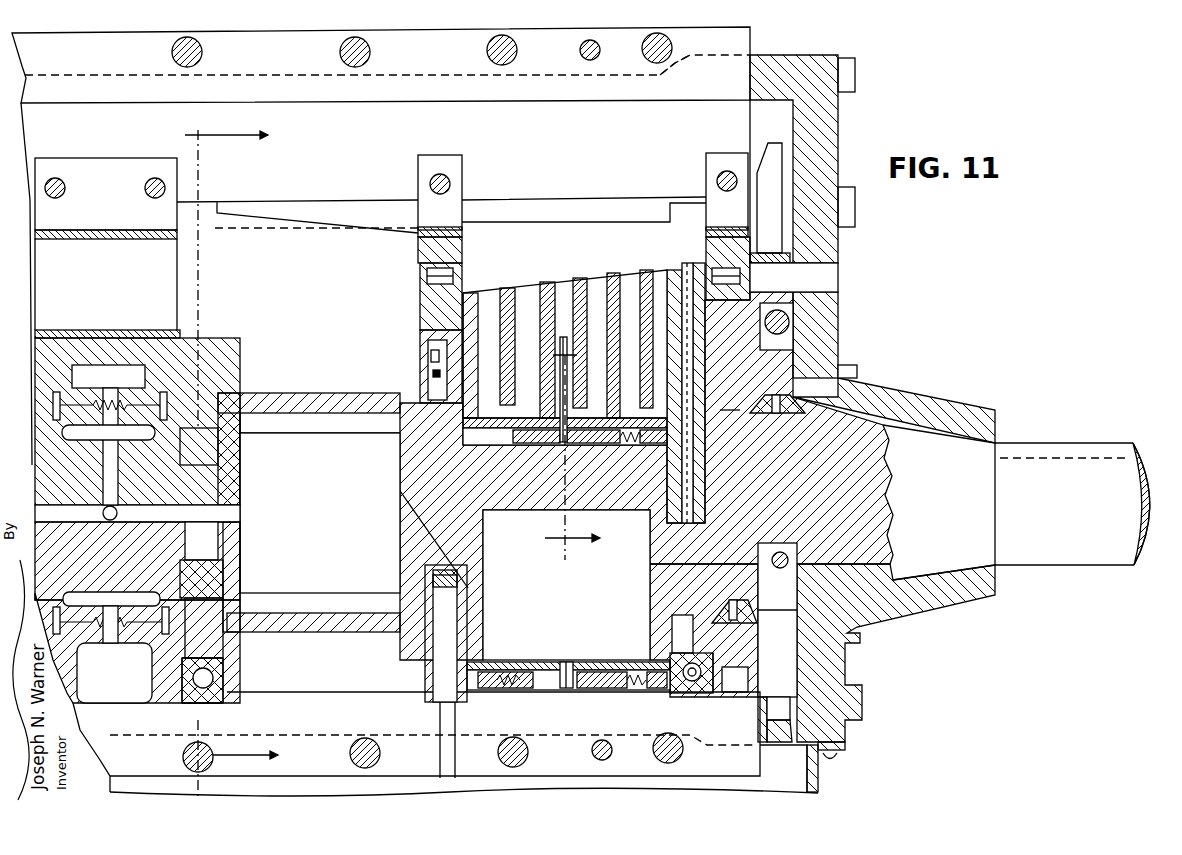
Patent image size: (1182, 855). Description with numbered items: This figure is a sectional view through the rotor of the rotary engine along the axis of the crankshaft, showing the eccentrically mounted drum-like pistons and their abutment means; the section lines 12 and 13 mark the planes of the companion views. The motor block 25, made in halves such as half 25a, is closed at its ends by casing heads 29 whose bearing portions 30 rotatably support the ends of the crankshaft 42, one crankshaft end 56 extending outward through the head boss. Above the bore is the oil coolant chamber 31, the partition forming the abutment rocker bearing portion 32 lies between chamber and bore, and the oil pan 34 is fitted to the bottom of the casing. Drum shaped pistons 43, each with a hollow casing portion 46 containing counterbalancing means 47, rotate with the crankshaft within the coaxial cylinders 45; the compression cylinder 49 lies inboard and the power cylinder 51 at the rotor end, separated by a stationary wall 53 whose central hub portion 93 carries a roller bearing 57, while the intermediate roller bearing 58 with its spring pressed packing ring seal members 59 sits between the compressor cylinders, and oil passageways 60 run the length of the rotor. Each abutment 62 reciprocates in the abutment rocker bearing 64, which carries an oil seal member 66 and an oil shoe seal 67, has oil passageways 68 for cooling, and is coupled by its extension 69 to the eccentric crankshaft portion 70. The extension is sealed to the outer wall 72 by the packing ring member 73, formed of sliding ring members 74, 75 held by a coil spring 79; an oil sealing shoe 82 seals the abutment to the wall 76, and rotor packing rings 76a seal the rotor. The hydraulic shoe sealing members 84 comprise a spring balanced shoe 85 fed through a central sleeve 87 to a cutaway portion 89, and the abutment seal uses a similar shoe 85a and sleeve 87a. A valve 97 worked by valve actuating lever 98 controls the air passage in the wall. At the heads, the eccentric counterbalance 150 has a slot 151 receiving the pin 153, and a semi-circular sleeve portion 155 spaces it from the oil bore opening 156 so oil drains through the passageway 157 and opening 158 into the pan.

The section line 12 is at (246, 463).
The section line 13 is at (572, 450).
The motor block 25 is at (748, 47).
The motor block half 25a is at (686, 92).
The casing head 29 is at (830, 152).
The bearing portion 30 is at (915, 394).
The oil coolant chamber 31 is at (600, 128).
The abutment rocker bearing portion 32 is at (484, 200).
The oil pan 34 is at (830, 781).
The crankshaft 42 is at (942, 508).
The drum shaped piston 43 is at (484, 646).
The cylinder 45 is at (656, 690).
The hollow casing portion 46 is at (362, 613).
The counterbalancing means 47 is at (318, 572).
The compression cylinder 49 is at (433, 709).
The power cylinder 51 is at (528, 671).
The stationary wall 53 is at (418, 262).
The crankshaft end 56 is at (1053, 447).
The roller bearing 57 is at (406, 456).
The intermediate roller bearing 58 is at (92, 438).
The packing ring seal member 59 is at (166, 388).
The oil passageway 60 is at (237, 498).
The abutment 62 is at (566, 282).
The abutment rocker bearing 64 is at (496, 278).
The oil seal member 66 is at (541, 278).
The oil shoe seal 67 is at (642, 430).
The oil passageway 68 is at (633, 278).
The abutment extension 69 is at (200, 455).
The eccentric crankshaft portion 70 is at (210, 545).
The outer wall 72 is at (728, 702).
The packing ring member 73 is at (700, 680).
The inner ring member 74 is at (670, 660).
The outer ring member 75 is at (705, 692).
The wall 76 is at (742, 412).
The rotor packing ring 76a is at (730, 412).
The coil spring 79 is at (686, 680).
The oil sealing shoe 82 is at (465, 278).
The hydraulic shoe sealing member 84 is at (612, 665).
The spring balanced shoe 85 is at (548, 672).
The spring balanced shoe 85a is at (526, 430).
The central sleeve 87 is at (567, 663).
The sleeve 87a is at (570, 422).
The cutaway portion 89 is at (578, 690).
The central hub portion 93 is at (195, 704).
The valve 97 is at (428, 355).
The valve actuating lever 98 is at (430, 375).
The eccentric counterbalance 150 is at (778, 175).
The slot 151 is at (782, 252).
The pin 153 is at (828, 287).
The semi-circular sleeve portion 155 is at (762, 335).
The oil bore opening 156 is at (762, 567).
The passageway 157 is at (783, 650).
The opening 158 is at (781, 706).